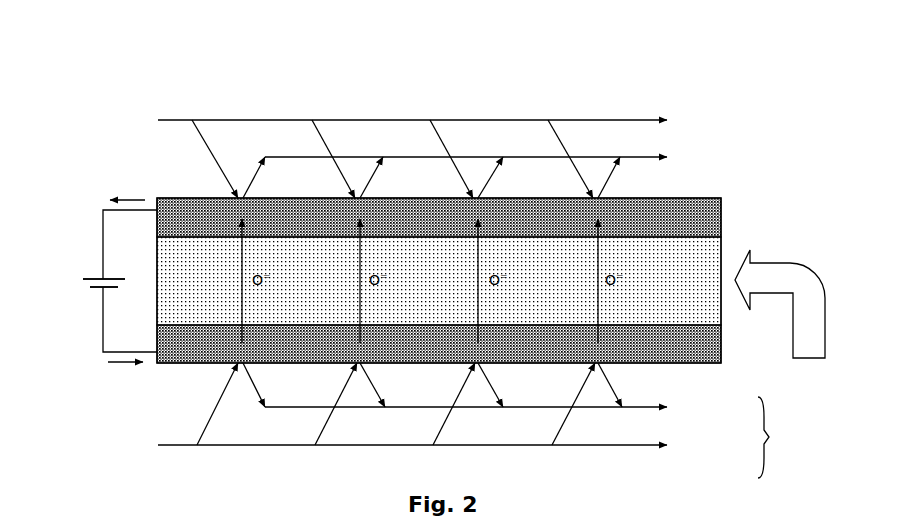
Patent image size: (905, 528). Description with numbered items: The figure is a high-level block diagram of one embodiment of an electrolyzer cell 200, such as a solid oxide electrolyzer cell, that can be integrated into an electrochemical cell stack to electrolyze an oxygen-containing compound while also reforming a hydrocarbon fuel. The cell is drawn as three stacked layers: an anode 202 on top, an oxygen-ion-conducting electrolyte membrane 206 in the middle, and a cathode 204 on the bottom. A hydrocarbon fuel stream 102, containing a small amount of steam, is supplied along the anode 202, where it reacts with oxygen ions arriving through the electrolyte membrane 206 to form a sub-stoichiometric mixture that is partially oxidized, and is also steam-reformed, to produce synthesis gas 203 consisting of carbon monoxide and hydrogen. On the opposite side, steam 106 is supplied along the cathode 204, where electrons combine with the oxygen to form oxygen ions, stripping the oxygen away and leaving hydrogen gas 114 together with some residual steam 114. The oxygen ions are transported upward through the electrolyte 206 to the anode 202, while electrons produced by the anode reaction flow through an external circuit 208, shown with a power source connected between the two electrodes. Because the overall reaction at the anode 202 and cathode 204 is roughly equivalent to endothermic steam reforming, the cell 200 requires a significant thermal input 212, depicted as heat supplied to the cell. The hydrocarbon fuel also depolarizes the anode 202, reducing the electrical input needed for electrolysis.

The electrolyzer cell 200 is at (297, 62).
The hydrocarbon fuel stream 102 is at (103, 100).
The synthesis gas 203 is at (708, 140).
The anode 202 is at (708, 215).
The electrolyte membrane 206 is at (718, 308).
The cathode 204 is at (718, 343).
The external circuit 208 is at (103, 248).
The thermal input 212 is at (100, 292).
The steam 106 is at (135, 430).
The hydrogen gas 114 is at (525, 420).